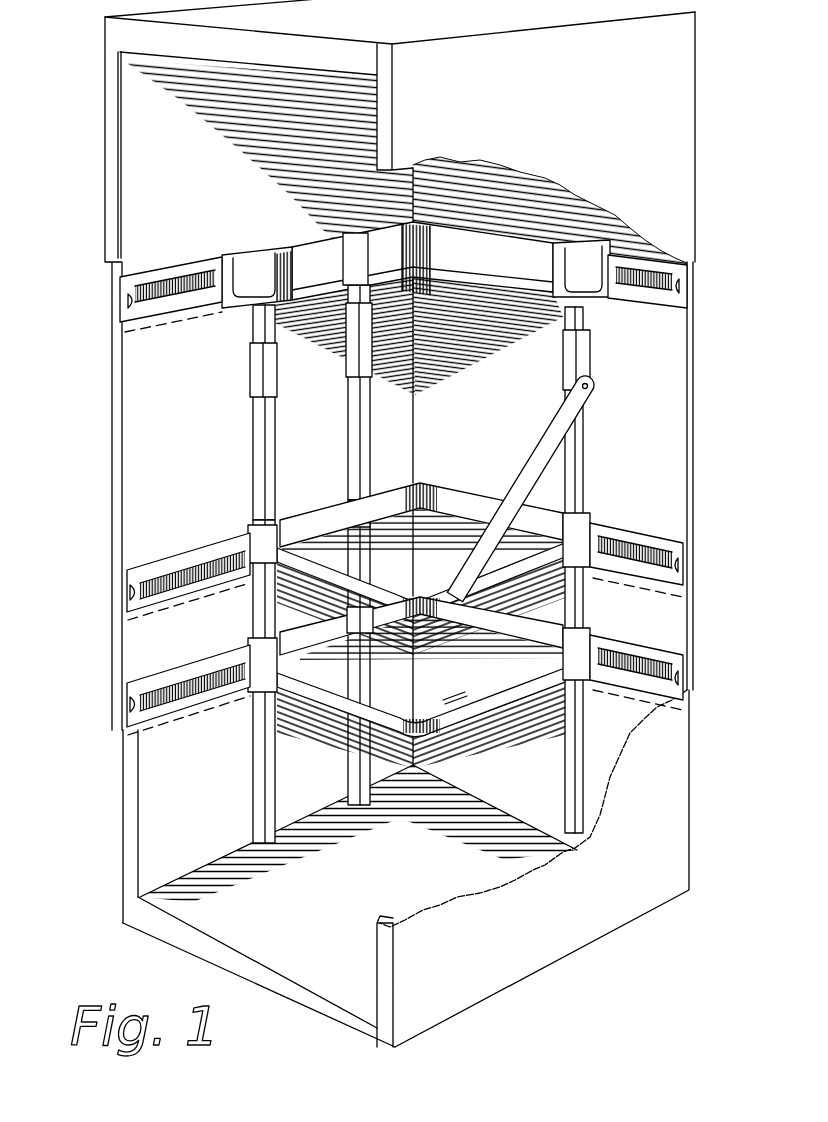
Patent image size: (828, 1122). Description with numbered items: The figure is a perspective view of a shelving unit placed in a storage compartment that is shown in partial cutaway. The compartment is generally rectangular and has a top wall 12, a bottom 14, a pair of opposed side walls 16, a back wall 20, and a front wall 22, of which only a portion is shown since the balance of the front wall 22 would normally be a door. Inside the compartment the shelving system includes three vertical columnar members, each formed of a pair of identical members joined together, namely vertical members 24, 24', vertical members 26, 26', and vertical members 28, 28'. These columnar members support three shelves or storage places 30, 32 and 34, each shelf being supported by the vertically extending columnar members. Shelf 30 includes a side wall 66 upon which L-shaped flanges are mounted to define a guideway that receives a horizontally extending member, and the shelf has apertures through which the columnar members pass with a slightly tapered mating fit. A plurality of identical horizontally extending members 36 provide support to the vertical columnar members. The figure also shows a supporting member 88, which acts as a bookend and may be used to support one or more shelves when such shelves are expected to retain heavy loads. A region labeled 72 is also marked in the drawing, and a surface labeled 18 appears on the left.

The top wall 12 is at (420, 28).
The bottom 14 is at (391, 897).
The side walls 16 is at (644, 860).
The left side wall 18 is at (202, 466).
The back wall 20 is at (646, 444).
The front wall 22 is at (142, 922).
The vertical member 24 is at (236, 681).
The vertical member 24' is at (288, 412).
The vertical member 26 is at (338, 652).
The vertical member 26' is at (337, 366).
The vertical member 28 is at (595, 676).
The vertical member 28' is at (605, 413).
The shelf 30 is at (436, 693).
The shelf 32 is at (420, 583).
The shelf 34 is at (540, 255).
The horizontally extending member 36 is at (172, 268).
The side wall 66 is at (330, 630).
The shelf lip 72 is at (497, 683).
The supporting member 88 is at (540, 448).